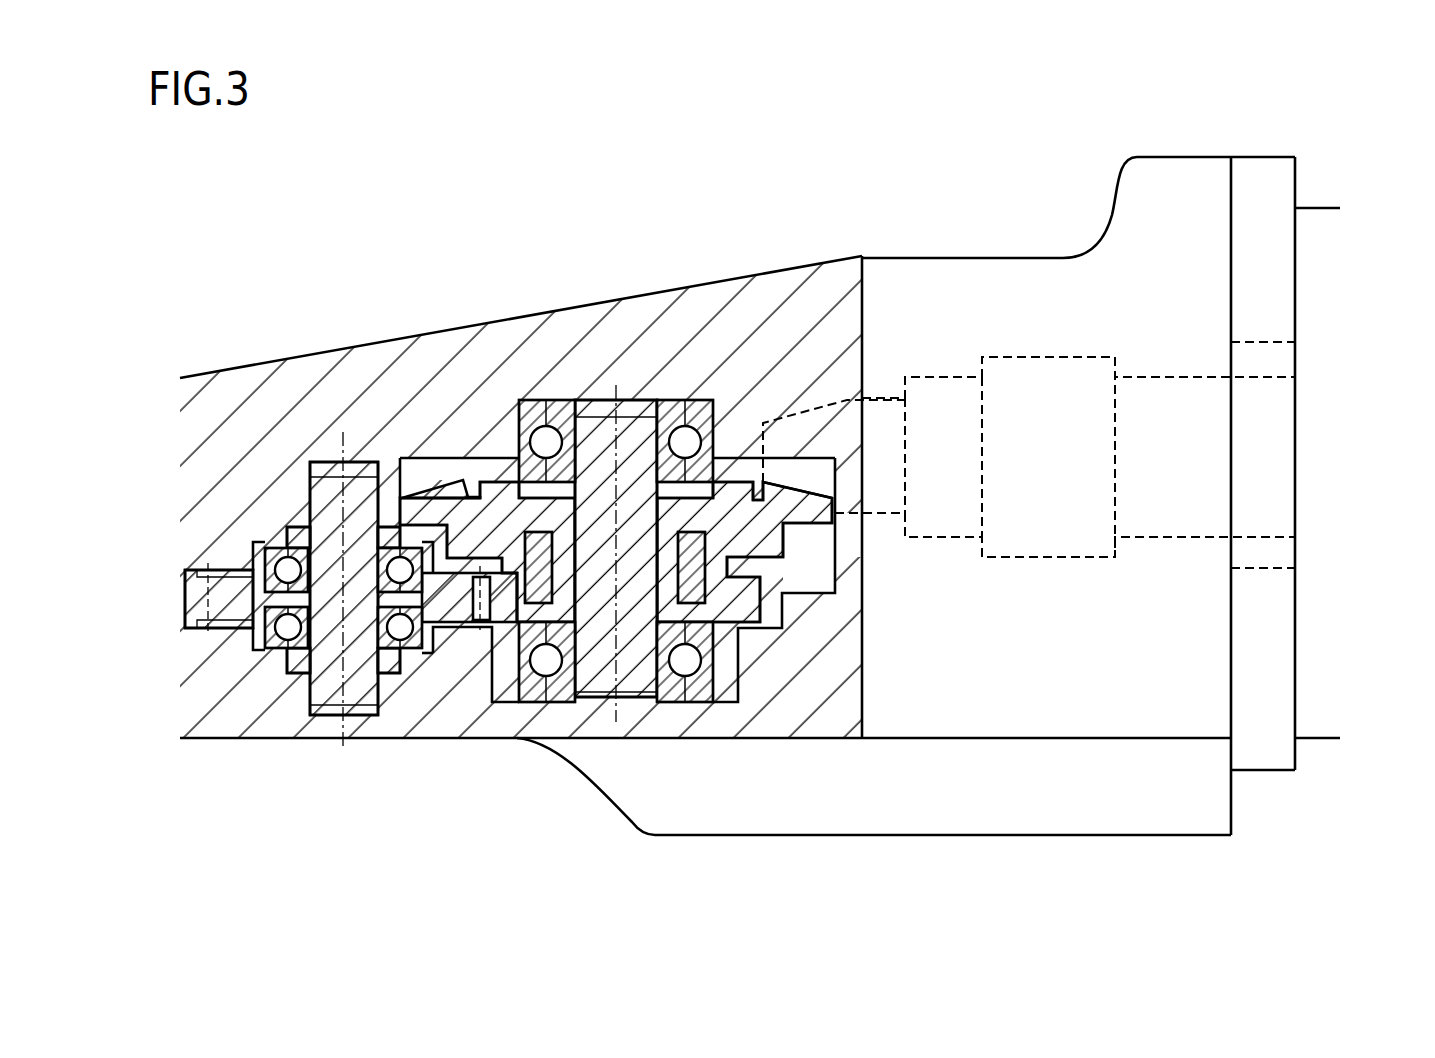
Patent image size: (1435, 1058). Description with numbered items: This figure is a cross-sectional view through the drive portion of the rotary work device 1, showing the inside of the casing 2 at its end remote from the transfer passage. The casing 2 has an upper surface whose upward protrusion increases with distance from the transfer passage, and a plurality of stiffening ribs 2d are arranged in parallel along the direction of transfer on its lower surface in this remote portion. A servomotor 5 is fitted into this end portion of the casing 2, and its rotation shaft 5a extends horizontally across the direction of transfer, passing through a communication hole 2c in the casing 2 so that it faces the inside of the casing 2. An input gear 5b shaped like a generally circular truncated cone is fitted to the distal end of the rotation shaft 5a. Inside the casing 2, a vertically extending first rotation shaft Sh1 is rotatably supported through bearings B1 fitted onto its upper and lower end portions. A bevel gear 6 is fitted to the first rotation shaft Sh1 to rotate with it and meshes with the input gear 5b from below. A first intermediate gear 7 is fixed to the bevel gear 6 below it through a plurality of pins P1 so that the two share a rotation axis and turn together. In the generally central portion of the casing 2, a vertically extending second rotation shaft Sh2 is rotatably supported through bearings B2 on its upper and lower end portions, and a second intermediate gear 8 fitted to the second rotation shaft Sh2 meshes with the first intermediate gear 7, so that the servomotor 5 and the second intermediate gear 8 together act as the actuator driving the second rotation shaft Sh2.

The rotary work device 1 is at (1009, 136).
The casing 2 is at (769, 266).
The communication hole 2c is at (1272, 342).
The stiffening ribs 2d is at (1051, 802).
The servomotor 5 is at (1320, 200).
The rotation shaft 5a is at (1162, 540).
The input gear 5b is at (879, 398).
The bevel gear 6 is at (807, 525).
The first intermediate gear 7 is at (720, 545).
The second intermediate gear 8 is at (232, 603).
The bearings B1 is at (684, 400).
The bearings B2 is at (400, 548).
The pins P1 is at (506, 622).
The first rotation shaft Sh1 is at (638, 447).
The second rotation shaft Sh2 is at (327, 487).